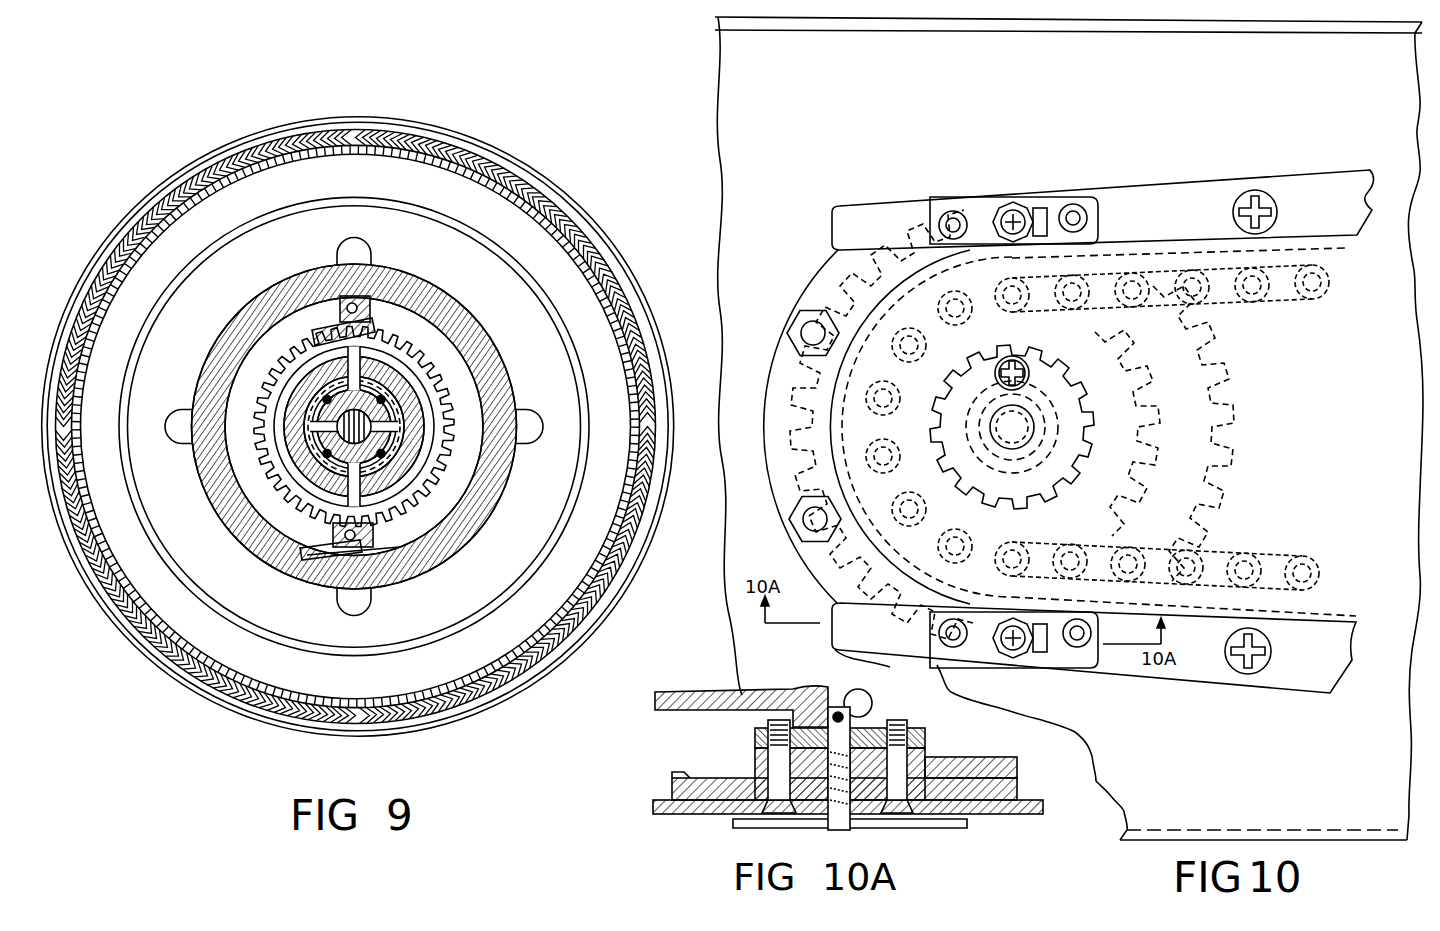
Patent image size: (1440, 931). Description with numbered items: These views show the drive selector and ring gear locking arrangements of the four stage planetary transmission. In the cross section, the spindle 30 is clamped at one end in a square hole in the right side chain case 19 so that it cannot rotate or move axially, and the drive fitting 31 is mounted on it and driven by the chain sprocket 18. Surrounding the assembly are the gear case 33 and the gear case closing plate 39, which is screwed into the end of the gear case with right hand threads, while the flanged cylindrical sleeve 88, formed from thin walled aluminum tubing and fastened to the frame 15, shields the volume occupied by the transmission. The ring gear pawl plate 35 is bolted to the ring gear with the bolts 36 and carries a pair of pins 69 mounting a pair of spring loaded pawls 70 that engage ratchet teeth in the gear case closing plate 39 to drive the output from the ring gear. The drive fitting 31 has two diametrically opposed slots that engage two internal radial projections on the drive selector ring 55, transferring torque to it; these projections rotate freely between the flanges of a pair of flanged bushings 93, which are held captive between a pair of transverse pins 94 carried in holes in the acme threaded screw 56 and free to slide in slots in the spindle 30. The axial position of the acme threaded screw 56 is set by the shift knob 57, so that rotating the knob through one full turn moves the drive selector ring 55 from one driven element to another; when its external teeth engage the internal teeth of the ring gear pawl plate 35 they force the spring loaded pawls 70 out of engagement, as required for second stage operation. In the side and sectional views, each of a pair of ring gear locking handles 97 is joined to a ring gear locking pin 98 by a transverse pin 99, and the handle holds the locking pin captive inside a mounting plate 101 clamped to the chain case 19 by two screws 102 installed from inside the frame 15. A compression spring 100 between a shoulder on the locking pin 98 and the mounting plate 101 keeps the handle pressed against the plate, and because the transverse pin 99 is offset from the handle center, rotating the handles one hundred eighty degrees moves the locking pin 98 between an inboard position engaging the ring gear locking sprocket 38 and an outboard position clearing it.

In FIG. 9, the flanged cylindrical sleeve 88 is at (268, 131).
In FIG. 9, the gear case 33 is at (343, 134).
In FIG. 9, the gear case closing plate 39 is at (393, 138).
In FIG. 9, the ring gear pawl plate 35 is at (433, 373).
In FIG. 9, the bolts 36 is at (374, 256).
In FIG. 9, the acme threaded screw 56 is at (280, 490).
In FIG. 9, the pins 69 is at (338, 315).
In FIG. 9, the spring loaded pawls 70 is at (378, 323).
In FIG. 9, the flanged bushings 93 is at (397, 417).
In FIG. 9, the transverse pins 94 is at (423, 417).
In FIG. 9, the drive fitting 31 is at (390, 410).
In FIG. 9, the drive selector ring 55 is at (400, 420).
In FIG. 9, the spindle 30 is at (400, 435).
In FIG. 10, the ring gear locking handles 97 is at (858, 205).
In FIG. 10A, the ring gear locking handles 97 is at (678, 692).
In FIG. 10, the chain case 19 is at (1185, 176).
In FIG. 10A, the chain case 19 is at (710, 778).
In FIG. 10, the screws 102 is at (968, 205).
In FIG. 10A, the screws 102 is at (770, 813).
In FIG. 10, the transverse pin 99 is at (1010, 205).
In FIG. 10A, the transverse pin 99 is at (840, 712).
In FIG. 10, the ring gear locking pin 98 is at (1045, 212).
In FIG. 10A, the ring gear locking pin 98 is at (872, 698).
In FIG. 10, the chain sprocket 18 is at (1110, 340).
In FIG. 10, the ring gear locking sprocket 38 is at (1205, 333).
In FIG. 10A, the ring gear locking sprocket 38 is at (946, 834).
In FIG. 10, the shift knob 57 is at (1100, 440).
In FIG. 10A, the compression spring 100 is at (872, 735).
In FIG. 10A, the mounting plate 101 is at (930, 757).
In FIG. 10A, the frame 15 is at (1040, 814).